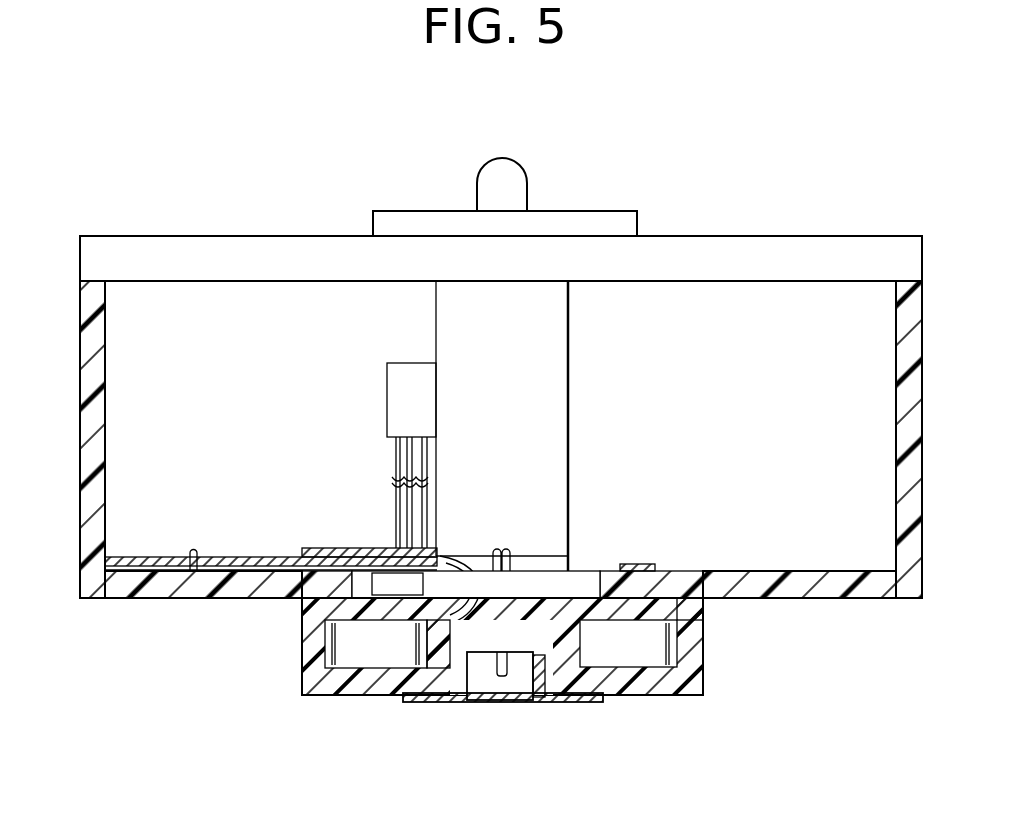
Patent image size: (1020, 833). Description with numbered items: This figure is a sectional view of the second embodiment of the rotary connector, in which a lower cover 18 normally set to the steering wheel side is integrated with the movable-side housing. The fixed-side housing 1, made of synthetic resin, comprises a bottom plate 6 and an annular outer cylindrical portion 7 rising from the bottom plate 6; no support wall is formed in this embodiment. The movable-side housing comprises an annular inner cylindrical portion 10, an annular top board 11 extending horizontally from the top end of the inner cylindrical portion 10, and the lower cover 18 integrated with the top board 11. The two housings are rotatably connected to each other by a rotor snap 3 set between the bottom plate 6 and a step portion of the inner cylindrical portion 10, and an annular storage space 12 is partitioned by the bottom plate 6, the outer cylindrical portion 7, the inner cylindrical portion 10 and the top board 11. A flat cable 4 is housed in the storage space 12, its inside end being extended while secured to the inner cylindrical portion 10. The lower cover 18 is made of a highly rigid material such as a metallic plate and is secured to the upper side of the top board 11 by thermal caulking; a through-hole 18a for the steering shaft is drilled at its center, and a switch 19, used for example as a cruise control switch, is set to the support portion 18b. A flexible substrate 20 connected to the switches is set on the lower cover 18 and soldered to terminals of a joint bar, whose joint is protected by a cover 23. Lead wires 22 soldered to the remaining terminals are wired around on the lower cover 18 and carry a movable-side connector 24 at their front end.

The fixed-side housing 1 is at (494, 686).
The rotor snap 3 is at (530, 678).
The flat cable 4 is at (676, 645).
The bottom plate 6 is at (342, 690).
The outer cylindrical portion 7 is at (310, 660).
The inner cylindrical portion 10 is at (425, 632).
The top board 11 is at (690, 605).
The storage space 12 is at (630, 655).
The lower cover 18 is at (838, 599).
The through-hole 18a is at (580, 578).
The support portion 18b is at (95, 357).
The switch 19 is at (528, 177).
The flexible substrate 20 is at (230, 553).
The lead wire 22 is at (392, 455).
The cover 23 is at (330, 547).
The movable-side connector 24 is at (386, 392).